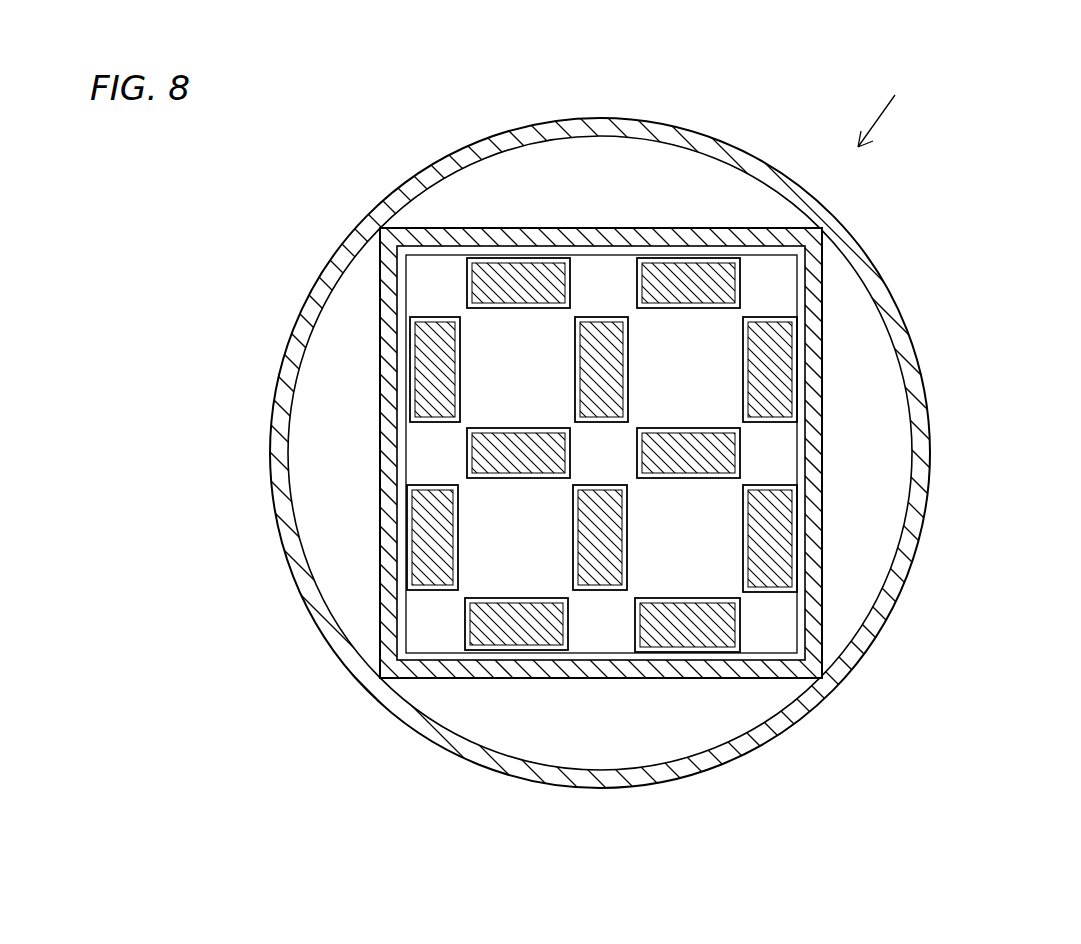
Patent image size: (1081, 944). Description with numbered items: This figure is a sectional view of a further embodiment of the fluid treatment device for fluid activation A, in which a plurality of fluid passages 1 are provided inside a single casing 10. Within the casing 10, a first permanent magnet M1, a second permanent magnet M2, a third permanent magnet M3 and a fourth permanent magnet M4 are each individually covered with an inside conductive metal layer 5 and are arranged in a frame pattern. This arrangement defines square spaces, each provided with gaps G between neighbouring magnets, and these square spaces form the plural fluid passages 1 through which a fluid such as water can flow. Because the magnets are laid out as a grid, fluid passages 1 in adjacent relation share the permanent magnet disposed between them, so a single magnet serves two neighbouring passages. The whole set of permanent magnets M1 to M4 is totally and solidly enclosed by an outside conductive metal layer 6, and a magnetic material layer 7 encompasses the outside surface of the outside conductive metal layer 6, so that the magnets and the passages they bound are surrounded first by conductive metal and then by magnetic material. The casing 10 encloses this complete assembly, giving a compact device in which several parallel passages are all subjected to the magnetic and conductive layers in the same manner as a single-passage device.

The fluid passage 1 is at (372, 232).
The inside conductive metal layer 5 is at (540, 472).
The outside conductive metal layer 6 is at (483, 343).
The magnetic material layer 7 is at (813, 283).
The casing 10 is at (917, 510).
The fluid treatment device for fluid activation A is at (887, 106).
The gap G is at (460, 313).
The first permanent magnet M1 is at (497, 285).
The second permanent magnet M2 is at (430, 395).
The third permanent magnet M3 is at (970, 443).
The fourth permanent magnet M4 is at (617, 327).